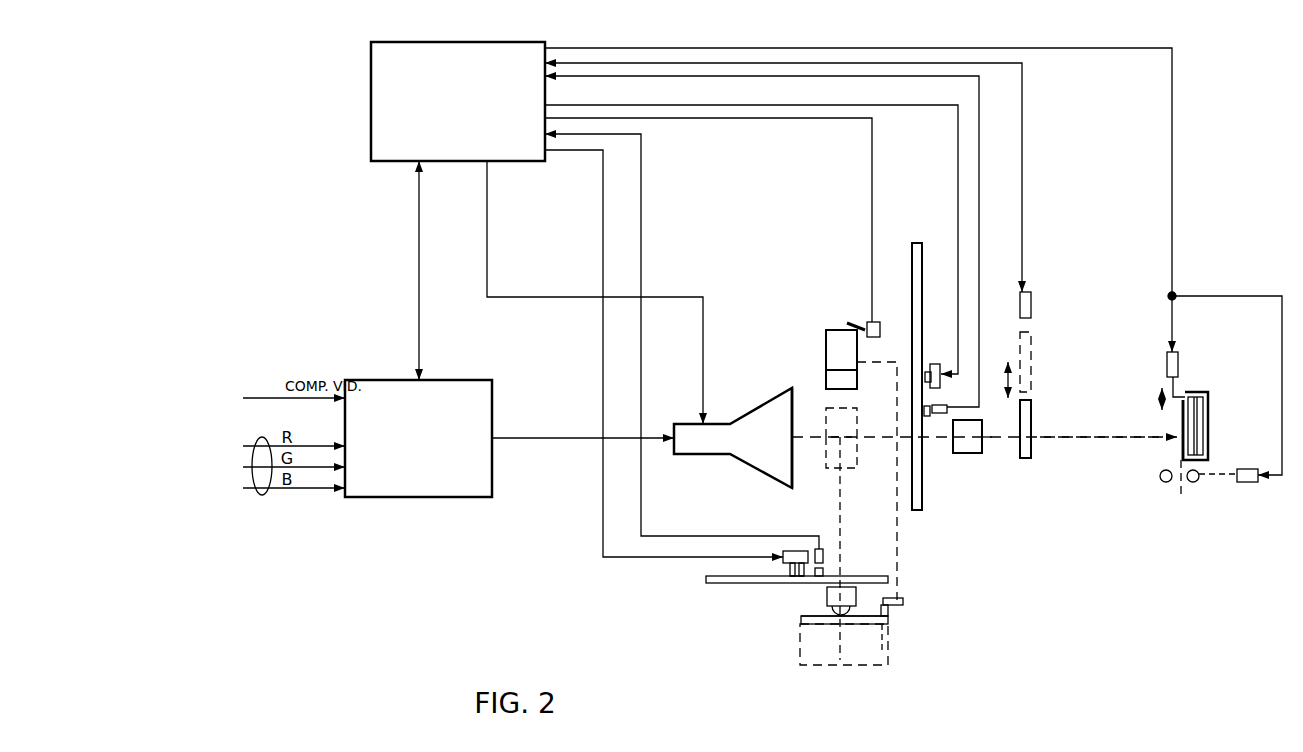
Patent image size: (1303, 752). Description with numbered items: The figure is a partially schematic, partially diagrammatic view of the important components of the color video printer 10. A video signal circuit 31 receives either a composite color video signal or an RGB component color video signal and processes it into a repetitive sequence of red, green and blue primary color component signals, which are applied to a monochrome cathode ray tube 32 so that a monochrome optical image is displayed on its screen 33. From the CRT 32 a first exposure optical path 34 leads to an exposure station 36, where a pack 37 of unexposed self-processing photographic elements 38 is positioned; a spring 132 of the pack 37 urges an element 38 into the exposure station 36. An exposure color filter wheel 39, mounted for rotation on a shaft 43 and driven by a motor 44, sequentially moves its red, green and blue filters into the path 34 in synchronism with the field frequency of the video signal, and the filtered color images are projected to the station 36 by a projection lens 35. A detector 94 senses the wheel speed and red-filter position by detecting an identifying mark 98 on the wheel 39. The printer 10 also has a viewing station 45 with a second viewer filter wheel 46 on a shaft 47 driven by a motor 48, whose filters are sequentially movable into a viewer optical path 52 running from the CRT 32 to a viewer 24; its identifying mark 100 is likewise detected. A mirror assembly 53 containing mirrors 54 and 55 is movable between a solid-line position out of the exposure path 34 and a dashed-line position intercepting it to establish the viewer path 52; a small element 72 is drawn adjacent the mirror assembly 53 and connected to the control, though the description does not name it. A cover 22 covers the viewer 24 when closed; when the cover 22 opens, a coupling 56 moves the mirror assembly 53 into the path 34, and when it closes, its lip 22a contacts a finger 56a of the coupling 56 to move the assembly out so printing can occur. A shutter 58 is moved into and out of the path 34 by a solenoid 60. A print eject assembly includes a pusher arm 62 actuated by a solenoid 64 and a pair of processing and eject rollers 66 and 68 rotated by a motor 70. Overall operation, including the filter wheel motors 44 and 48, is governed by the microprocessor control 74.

The printer 10 is at (1165, 648).
The cover 22 is at (842, 624).
The lip 22a is at (893, 648).
The viewer 24 is at (827, 592).
The video signal circuit 31 is at (453, 381).
The monochrome cathode ray tube 32 is at (742, 464).
The screen 33 is at (799, 468).
The exposure optical path 34 is at (1092, 440).
The projection lens 35 is at (967, 453).
The exposure station 36 is at (823, 557).
The pack 37 is at (1203, 392).
The photographic element 38 is at (1180, 446).
The exposure color filter wheel 39 is at (916, 244).
The shaft 43 is at (928, 372).
The motor 44 is at (938, 373).
The viewing station 45 is at (785, 612).
The viewer filter wheel 46 is at (714, 593).
The shaft 47 is at (792, 572).
The motor 48 is at (793, 551).
The viewer optical path 52 is at (843, 516).
The mirror assembly 53 is at (815, 322).
The mirror 54 is at (826, 378).
The mirror 55 is at (826, 350).
The coupling 56 is at (900, 545).
The finger 56a is at (903, 605).
The shutter 58 is at (1027, 458).
The solenoid 60 is at (1031, 303).
The pusher arm 62 is at (1171, 387).
The solenoid 64 is at (1179, 362).
The processing and eject roller 66 is at (1162, 482).
The processing and eject roller 68 is at (1197, 482).
The motor 70 is at (1250, 482).
The filter motor 72 is at (880, 327).
The microprocessor control 74 is at (493, 42).
The detector 94 is at (941, 406).
The identifying mark 98 is at (928, 416).
The identifying mark 100 is at (823, 571).
The spring 132 is at (1200, 432).